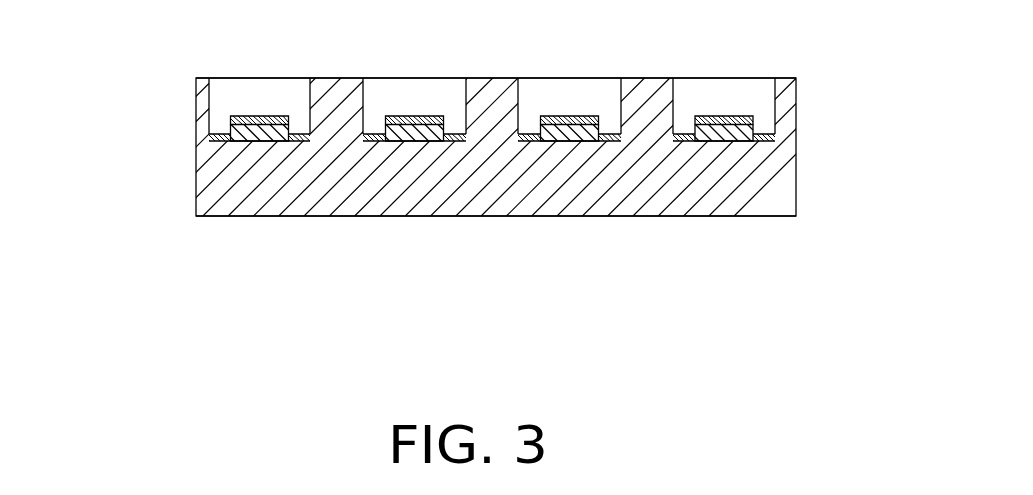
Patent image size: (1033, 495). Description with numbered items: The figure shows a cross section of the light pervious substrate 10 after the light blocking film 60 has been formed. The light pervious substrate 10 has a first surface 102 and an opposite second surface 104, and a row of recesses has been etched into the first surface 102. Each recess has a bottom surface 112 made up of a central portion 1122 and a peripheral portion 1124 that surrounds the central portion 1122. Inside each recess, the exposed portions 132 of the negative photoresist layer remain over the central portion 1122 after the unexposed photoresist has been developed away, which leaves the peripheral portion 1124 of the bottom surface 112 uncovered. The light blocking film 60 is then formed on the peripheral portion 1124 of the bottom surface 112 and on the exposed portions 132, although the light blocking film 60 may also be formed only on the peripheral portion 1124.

The light pervious substrate 10 is at (458, 140).
The first surface 102 is at (783, 78).
The second surface 104 is at (773, 217).
The bottom surface 112 is at (448, 159).
The central portion 1122 is at (259, 143).
The peripheral portion 1124 is at (221, 141).
The light blocking film 60 is at (222, 122).
The exposed portions 132 is at (284, 116).